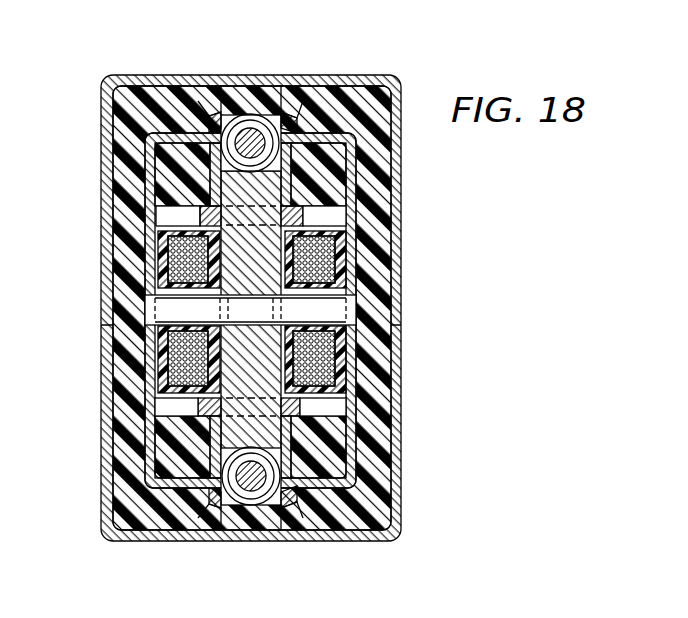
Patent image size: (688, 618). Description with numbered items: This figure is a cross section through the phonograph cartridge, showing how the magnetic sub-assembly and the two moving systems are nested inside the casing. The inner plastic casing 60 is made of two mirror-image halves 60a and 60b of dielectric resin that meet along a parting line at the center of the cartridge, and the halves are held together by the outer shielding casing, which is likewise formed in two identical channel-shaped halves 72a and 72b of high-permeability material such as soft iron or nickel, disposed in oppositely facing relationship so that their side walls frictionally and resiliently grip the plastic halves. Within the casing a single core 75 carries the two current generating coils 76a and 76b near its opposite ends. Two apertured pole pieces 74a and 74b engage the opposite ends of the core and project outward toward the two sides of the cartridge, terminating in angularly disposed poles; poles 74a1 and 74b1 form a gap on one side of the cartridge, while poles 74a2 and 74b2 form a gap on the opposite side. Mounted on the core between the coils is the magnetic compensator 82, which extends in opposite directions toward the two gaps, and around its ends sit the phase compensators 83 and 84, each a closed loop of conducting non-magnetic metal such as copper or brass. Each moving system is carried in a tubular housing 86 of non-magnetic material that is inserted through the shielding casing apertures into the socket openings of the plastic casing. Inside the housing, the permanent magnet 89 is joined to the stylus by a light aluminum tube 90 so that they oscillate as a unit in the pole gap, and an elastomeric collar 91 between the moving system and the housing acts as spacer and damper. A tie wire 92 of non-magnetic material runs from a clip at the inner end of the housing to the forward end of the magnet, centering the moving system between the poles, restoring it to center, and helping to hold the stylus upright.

The plastic casing 60 is at (159, 94).
The casing half 60a is at (367, 152).
The casing half 60b is at (122, 126).
The shielding casing half 72a is at (366, 69).
The shielding casing half 72b is at (350, 535).
The pole piece 74a is at (352, 263).
The pole piece 74b is at (150, 341).
The pole 74a1 is at (360, 512).
The pole 74a2 is at (287, 110).
The pole 74b1 is at (176, 530).
The pole 74b2 is at (193, 97).
The core 75 is at (327, 303).
The current generating coil 76a is at (332, 248).
The current generating coil 76b is at (165, 248).
The magnetic compensator 82 is at (240, 372).
The phase compensator 83 is at (282, 398).
The phase compensator 84 is at (270, 216).
The tubular housing 86 is at (152, 545).
The permanent magnet 89 is at (220, 106).
The tube 90 is at (306, 544).
The collar 91 is at (266, 109).
The tie wire 92 is at (249, 107).